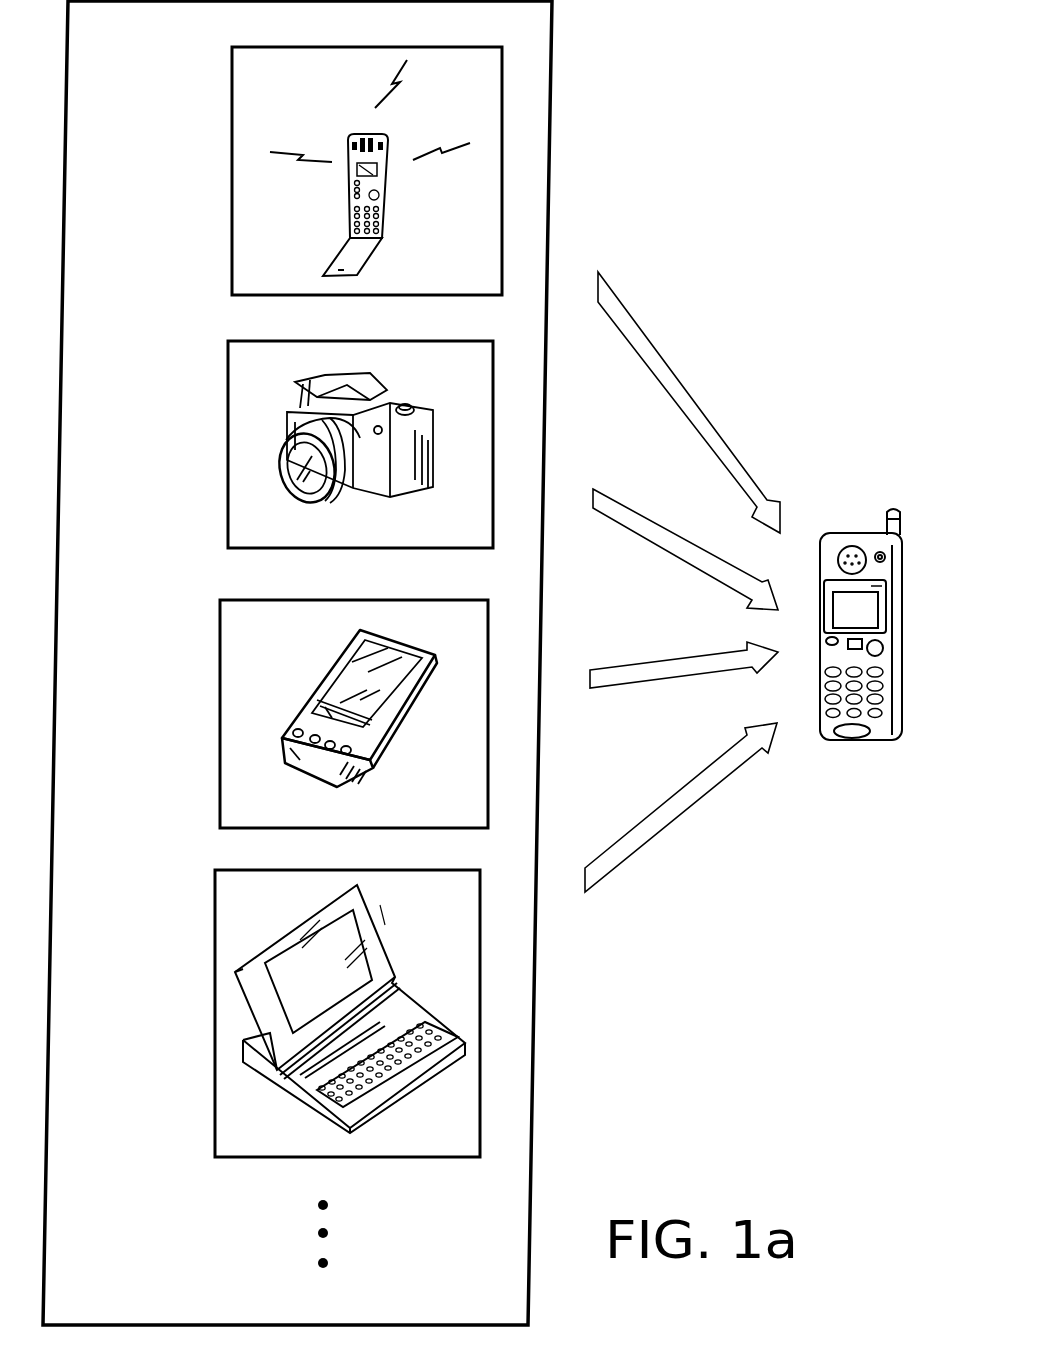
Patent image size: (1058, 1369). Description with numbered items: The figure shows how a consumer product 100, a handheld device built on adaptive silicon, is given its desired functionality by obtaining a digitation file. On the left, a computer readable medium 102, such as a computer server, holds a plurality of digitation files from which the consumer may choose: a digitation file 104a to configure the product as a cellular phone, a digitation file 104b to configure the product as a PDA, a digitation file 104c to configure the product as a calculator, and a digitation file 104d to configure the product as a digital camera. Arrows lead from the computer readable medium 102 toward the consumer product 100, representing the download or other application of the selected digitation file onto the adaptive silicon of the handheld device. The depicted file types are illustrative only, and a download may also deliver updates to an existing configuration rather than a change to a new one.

The consumer product 100 is at (856, 532).
The computer readable medium 102 is at (532, 1102).
The digitation file 104a is at (232, 170).
The digitation file 104b is at (228, 446).
The digitation file 104c is at (220, 716).
The digitation file 104d is at (215, 1013).